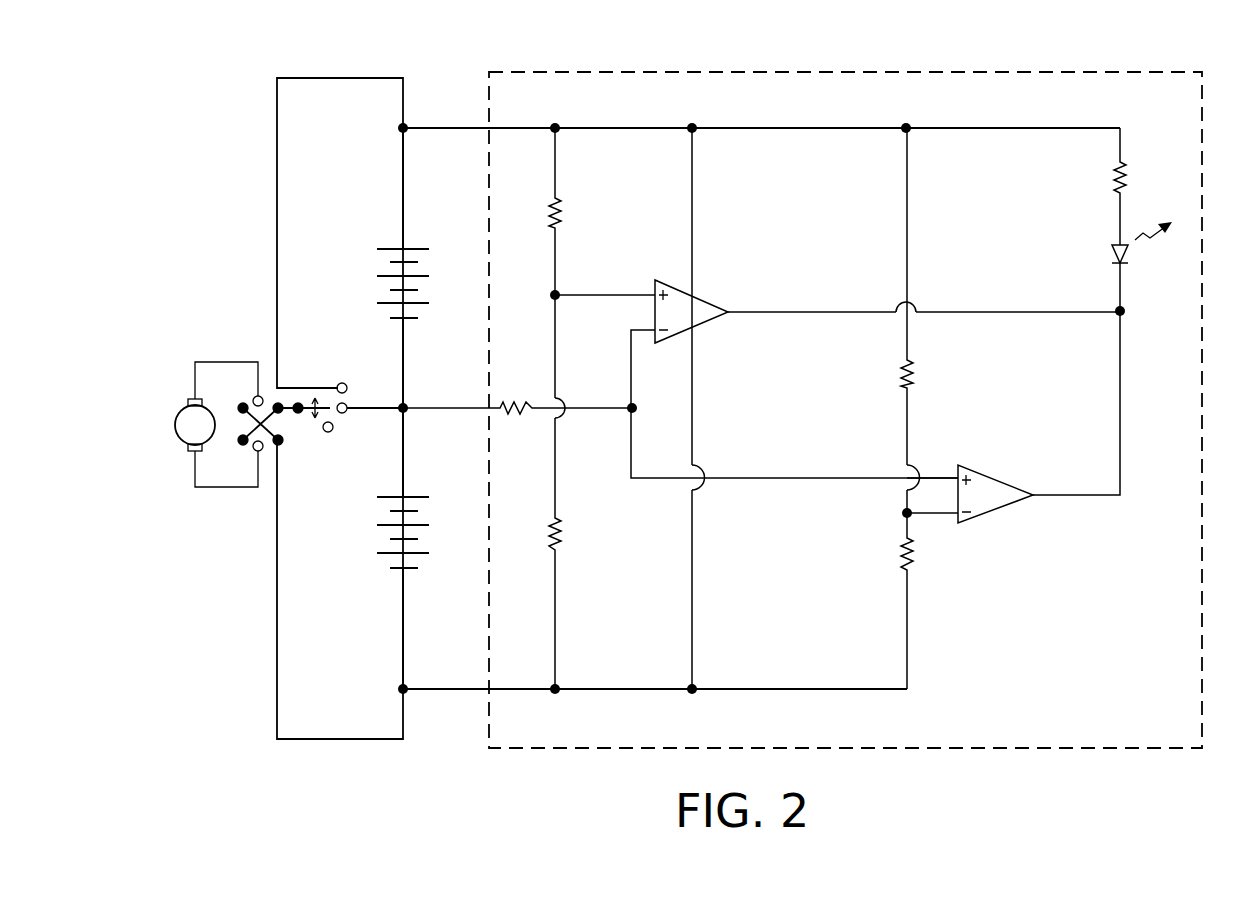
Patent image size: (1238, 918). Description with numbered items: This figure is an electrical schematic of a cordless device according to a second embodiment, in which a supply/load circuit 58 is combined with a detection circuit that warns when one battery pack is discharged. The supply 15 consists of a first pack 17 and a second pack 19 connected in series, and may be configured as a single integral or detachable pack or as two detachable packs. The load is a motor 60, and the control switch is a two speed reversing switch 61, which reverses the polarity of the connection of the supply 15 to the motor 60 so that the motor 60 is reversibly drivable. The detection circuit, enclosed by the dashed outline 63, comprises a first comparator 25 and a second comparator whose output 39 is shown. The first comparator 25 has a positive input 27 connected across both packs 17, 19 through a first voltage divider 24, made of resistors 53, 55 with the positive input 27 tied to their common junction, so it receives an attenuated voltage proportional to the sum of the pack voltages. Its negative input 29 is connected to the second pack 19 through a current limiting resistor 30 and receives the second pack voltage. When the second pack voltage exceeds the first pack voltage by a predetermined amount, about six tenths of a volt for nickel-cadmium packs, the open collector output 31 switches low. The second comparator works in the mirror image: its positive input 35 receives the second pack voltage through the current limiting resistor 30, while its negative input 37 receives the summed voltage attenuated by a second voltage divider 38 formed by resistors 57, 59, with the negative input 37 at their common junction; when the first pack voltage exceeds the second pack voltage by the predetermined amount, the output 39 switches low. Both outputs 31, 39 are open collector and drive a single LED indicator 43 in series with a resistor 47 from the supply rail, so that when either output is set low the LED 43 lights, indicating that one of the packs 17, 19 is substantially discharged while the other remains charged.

The supply 15 is at (396, 440).
The first pack 17 is at (428, 263).
The second pack 19 is at (428, 541).
The first voltage divider 24 is at (593, 408).
The first comparator 25 is at (708, 290).
The positive input 27 is at (655, 293).
The negative input 29 is at (655, 330).
The current limiting resistor 30 is at (522, 417).
The open collector output 31 is at (735, 313).
The positive input 35 is at (958, 478).
The negative input 37 is at (958, 518).
The second voltage divider 38 is at (876, 408).
The output 39 is at (1035, 497).
The LED indicator 43 is at (1110, 250).
The current limiting resistor 47 is at (1112, 180).
The resistor 53 is at (574, 210).
The resistor 55 is at (562, 535).
The resistor 57 is at (903, 373).
The supply/load circuit 58 is at (315, 740).
The resistor 59 is at (903, 565).
The motor 60 is at (173, 423).
The two speed reversing switch 61 is at (304, 380).
The monitoring circuit 63 is at (885, 70).